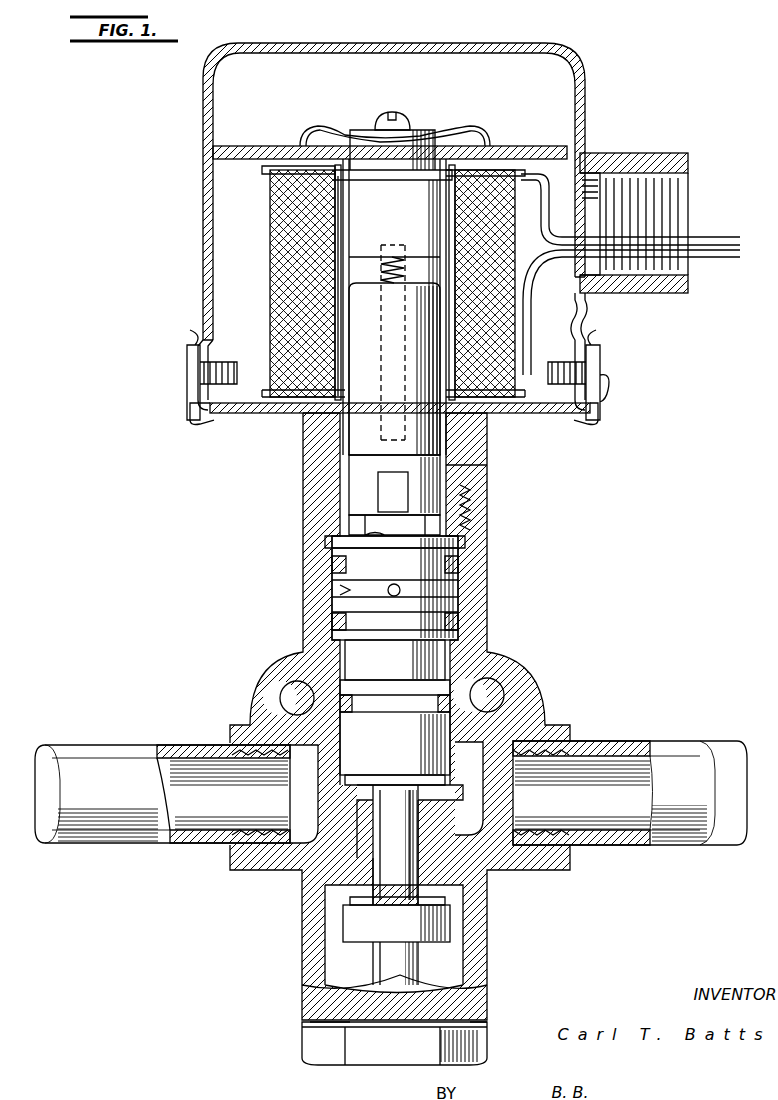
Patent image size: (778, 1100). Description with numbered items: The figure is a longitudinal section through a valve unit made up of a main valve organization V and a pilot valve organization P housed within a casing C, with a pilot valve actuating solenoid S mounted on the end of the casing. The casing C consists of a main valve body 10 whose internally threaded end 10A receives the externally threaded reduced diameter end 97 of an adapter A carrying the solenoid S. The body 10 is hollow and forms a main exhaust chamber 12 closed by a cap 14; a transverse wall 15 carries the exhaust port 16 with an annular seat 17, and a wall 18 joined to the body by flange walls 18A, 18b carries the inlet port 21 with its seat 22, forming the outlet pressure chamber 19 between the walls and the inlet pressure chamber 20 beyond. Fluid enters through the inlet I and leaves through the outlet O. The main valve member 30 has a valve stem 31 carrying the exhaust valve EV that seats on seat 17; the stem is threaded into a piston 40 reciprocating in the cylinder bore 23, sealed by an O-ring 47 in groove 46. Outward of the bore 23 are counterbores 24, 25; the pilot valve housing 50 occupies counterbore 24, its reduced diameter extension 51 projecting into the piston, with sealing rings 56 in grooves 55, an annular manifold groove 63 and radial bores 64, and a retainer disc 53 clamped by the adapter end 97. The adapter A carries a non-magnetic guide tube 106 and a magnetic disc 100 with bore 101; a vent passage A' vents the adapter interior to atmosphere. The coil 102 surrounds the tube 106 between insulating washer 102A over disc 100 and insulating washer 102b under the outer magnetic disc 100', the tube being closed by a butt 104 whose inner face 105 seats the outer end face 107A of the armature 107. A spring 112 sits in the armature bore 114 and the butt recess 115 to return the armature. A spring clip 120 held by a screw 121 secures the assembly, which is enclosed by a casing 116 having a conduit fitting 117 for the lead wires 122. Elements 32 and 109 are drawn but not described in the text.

The casing 116 is at (586, 95).
The magnetic steel washer or disc 100' is at (390, 121).
The disc or washer of magnetic steel 100 is at (394, 426).
The coil 102 is at (243, 333).
The insulating washer 102A is at (538, 413).
The insulating washer 102b is at (262, 170).
The plug or butt 104 is at (270, 250).
The pilot valve actuating solenoid S is at (268, 230).
The outer end face of the armature 107A is at (338, 276).
The inner end face of the butt 105 is at (374, 240).
The axial recess 115 is at (405, 248).
The coiled expansion spring 112 is at (408, 268).
The armature or plunger 107 is at (352, 340).
The axial bore 114 is at (380, 405).
The screw 121 is at (398, 118).
The spring clip 120 is at (450, 128).
The conduit fitting 117 is at (690, 160).
The lead wires 122 is at (700, 238).
The adapter A is at (400, 599).
The guide tube 106 is at (487, 443).
The vent passage or duct A' is at (506, 464).
The axial bore 101 is at (318, 410).
The externally threaded reduced diameter end 97 is at (476, 493).
The exhaust port 16 is at (447, 850).
The casing or housing structure C is at (487, 942).
The closing nut or cap 14 is at (318, 1046).
The inlet I is at (230, 737).
The outlet O is at (568, 727).
The inlet pressure chamber 20 is at (296, 745).
The cylinder bore 23 is at (503, 698).
The O-ring 47 is at (515, 680).
The sealing ring groove 46 is at (472, 670).
The piston 40 is at (350, 720).
The annular seat 22 is at (350, 780).
The inlet port 21 is at (420, 808).
The flange wall 18A is at (305, 810).
The wall 18 is at (470, 798).
The flange wall 18b is at (500, 790).
The discharge or outlet pressure chamber 19 is at (498, 838).
The annular seat 17 is at (470, 890).
The main valve body 10 is at (485, 903).
The exhaust valve EV is at (453, 925).
The main valve organization V is at (320, 880).
The transverse wall 15 is at (345, 884).
The lower piston 32 is at (352, 923).
The main exhaust chamber 12 is at (352, 957).
The valve stem 31 is at (395, 964).
The main valve member 30 is at (363, 967).
The stem head 109 is at (358, 503).
The internally threaded end of the valve body 10A is at (378, 510).
The retainer disc 53 is at (360, 530).
The pilot valve housing 50 is at (470, 566).
The counterbore 25 is at (462, 540).
The sealing rings 56 is at (345, 618).
The spaced grooves 55 is at (465, 620).
The pilot valve organization P is at (360, 598).
The radial bores 64 is at (402, 590).
The counterbore 24 is at (460, 597).
The annular groove 63 is at (345, 592).
The reduced diameter axial extension 51 is at (375, 655).